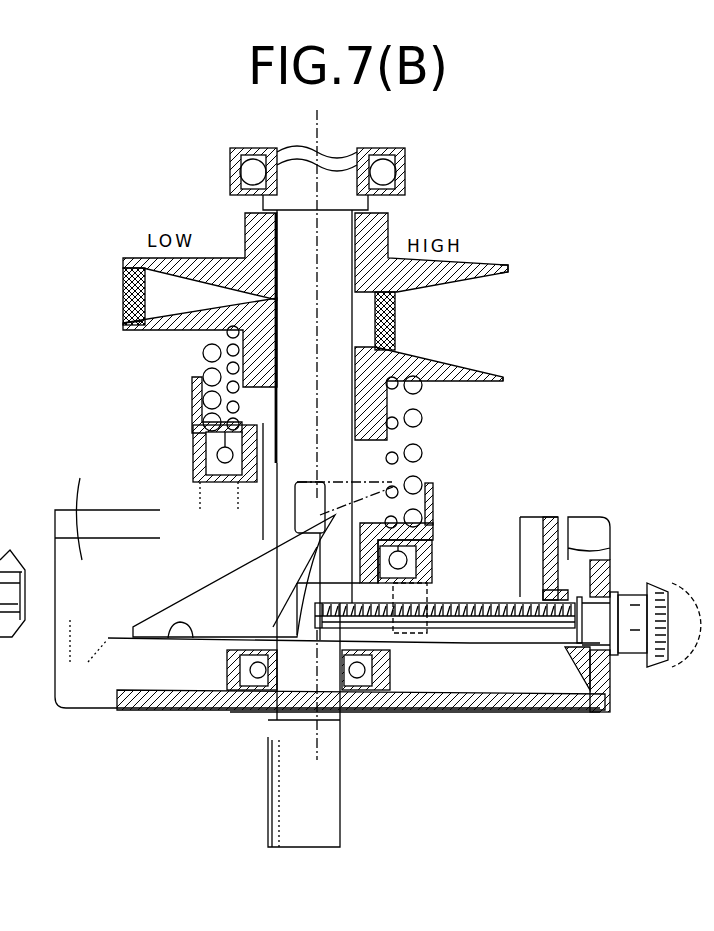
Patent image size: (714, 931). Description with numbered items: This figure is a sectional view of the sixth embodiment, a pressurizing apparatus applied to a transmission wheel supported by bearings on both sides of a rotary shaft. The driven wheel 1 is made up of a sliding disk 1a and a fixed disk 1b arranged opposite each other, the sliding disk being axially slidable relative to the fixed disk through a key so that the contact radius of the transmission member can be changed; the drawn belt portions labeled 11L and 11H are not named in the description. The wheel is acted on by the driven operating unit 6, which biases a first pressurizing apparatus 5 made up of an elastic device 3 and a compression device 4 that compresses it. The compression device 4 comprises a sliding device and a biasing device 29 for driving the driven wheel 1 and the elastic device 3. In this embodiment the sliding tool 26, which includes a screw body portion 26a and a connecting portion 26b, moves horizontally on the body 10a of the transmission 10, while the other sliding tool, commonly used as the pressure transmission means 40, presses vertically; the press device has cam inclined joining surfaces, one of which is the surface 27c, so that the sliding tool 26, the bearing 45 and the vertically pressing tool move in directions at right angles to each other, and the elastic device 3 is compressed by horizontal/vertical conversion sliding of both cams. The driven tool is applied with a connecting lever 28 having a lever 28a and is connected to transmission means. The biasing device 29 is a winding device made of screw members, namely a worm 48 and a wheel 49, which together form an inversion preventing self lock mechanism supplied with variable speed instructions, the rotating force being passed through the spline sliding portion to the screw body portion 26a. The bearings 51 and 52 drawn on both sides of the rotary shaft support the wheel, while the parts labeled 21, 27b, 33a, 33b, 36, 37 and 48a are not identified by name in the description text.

The driven wheel 1 is at (532, 308).
The sliding disk 1a is at (153, 328).
The fixed disk 1b is at (493, 266).
The elastic device 3 is at (193, 355).
The compression device 4 is at (181, 528).
The first pressurizing apparatus 5 is at (0, 408).
The driven operating unit 6 is at (409, 724).
The transmission 10 is at (77, 557).
The body 10a is at (165, 640).
The low-speed belt 11L is at (120, 290).
The high-speed belt 11H is at (397, 320).
The adjusting knob 21 is at (600, 625).
The sliding tool 26 is at (530, 527).
The screw body portion 26a is at (197, 600).
The connecting portion 26b is at (178, 640).
The shaft hub 27b is at (320, 497).
The cam inclined joining surface 27c is at (247, 700).
The connecting lever 28 is at (195, 447).
The lever 28a is at (435, 552).
The biasing device 29 is at (510, 650).
The inner coil spring 33a is at (395, 445).
The outer coil spring 33b is at (422, 412).
The movable pulley half 36 is at (418, 365).
The spring seat 37 is at (418, 488).
The pressure transmission means 40 is at (445, 541).
The bearing 45 is at (433, 508).
The worm 48 is at (470, 612).
The worm shaft 48a is at (465, 630).
The wheel 49 is at (562, 650).
The upper ball bearing 51 is at (405, 178).
The lower ball bearing 52 is at (367, 690).